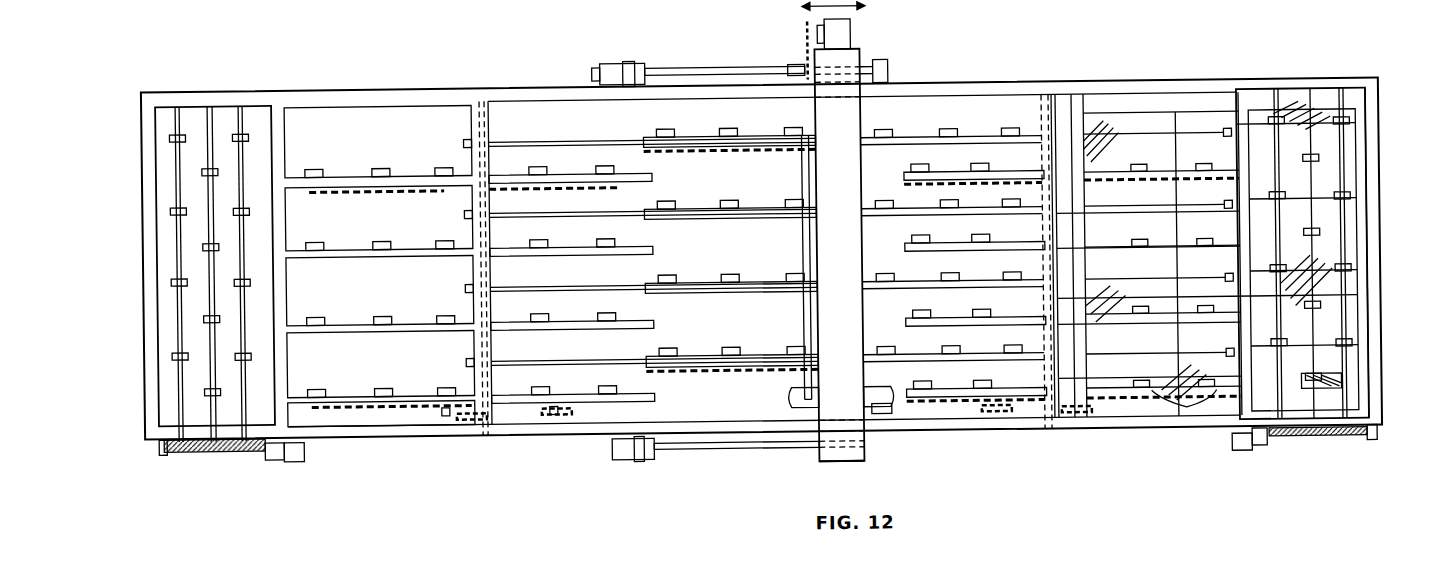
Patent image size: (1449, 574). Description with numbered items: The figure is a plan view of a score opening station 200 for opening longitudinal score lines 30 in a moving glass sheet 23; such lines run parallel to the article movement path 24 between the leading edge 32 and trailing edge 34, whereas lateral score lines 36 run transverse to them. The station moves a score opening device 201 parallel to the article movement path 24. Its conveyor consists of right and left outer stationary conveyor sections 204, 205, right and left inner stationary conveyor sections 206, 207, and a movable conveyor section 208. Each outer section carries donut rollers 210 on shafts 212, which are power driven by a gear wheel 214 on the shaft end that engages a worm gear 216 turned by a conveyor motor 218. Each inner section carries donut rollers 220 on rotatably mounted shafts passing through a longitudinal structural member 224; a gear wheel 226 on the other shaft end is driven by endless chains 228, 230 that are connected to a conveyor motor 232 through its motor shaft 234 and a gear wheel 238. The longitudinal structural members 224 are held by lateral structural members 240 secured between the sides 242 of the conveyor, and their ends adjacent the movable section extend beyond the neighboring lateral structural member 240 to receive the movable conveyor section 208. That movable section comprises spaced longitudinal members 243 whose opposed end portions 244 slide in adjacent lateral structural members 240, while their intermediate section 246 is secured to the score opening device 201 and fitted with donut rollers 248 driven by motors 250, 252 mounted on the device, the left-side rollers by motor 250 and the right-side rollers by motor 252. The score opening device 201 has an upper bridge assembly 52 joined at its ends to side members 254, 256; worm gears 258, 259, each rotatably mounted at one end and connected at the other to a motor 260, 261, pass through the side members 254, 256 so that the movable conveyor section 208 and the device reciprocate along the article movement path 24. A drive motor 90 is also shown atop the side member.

The sheet 23 is at (1290, 100).
The article movement path 24 is at (1383, 253).
The longitudinal score lines 30 is at (1148, 135).
The leading edge 32 is at (1075, 122).
The trailing edge 34 is at (1382, 143).
The lateral score lines 36 is at (1312, 240).
The upper bridge assembly 52 is at (876, 122).
The drive motor 90 is at (853, 32).
The score opening station 200 is at (1148, 52).
The score opening device 201 is at (878, 109).
The right outer stationary conveyor section 204 is at (1290, 62).
The left outer stationary conveyor section 205 is at (227, 460).
The right inner stationary conveyor section 206 is at (1065, 440).
The left inner stationary conveyor section 207 is at (478, 455).
The movable conveyor section 208 is at (750, 452).
The donut rollers 210 is at (205, 168).
The shafts 212 is at (205, 240).
The gear wheel 214 is at (212, 450).
The worm gear 216 is at (165, 448).
The conveyor motor 218 is at (292, 456).
The donut rollers 220 is at (382, 163).
The longitudinal structural member 224 is at (412, 392).
The gear wheel 226 is at (1185, 412).
The endless chain 228 is at (405, 422).
The endless chain 230 is at (455, 445).
The conveyor motor 232 is at (468, 165).
The motor shaft 234 is at (488, 265).
The gear wheel 238 is at (432, 416).
The lateral structural member 240 is at (490, 122).
The sides 242 is at (363, 85).
The longitudinal members 243 is at (753, 130).
The end portions 244 is at (545, 140).
The intermediate section 246 is at (760, 140).
The donut rollers 248 is at (730, 128).
The motor 250 is at (790, 398).
The motor 252 is at (905, 425).
The side member 254 is at (835, 462).
The side member 256 is at (862, 54).
The worm gear 258 is at (702, 449).
The worm gear 259 is at (690, 66).
The motor 260 is at (626, 458).
The motor 261 is at (620, 62).